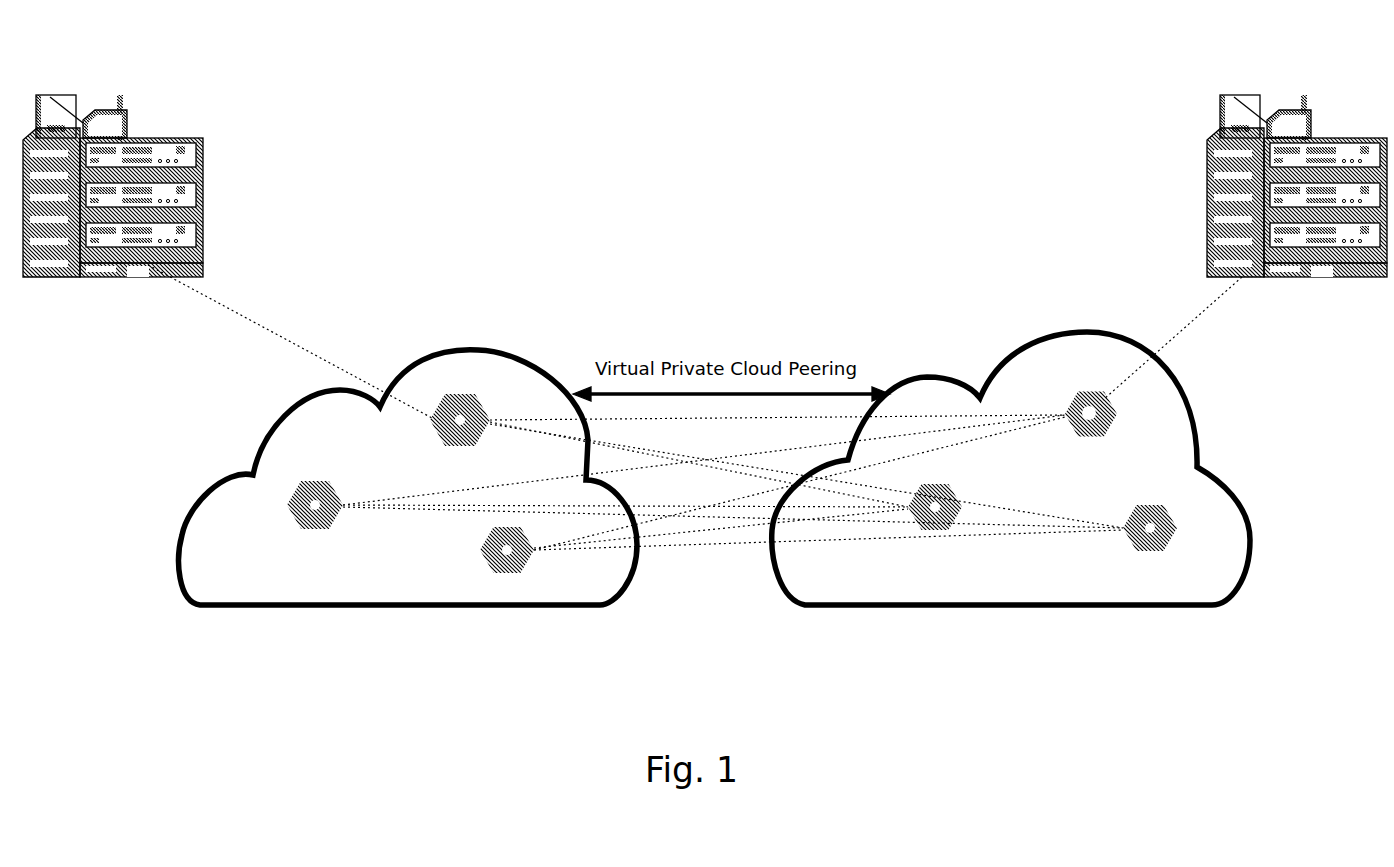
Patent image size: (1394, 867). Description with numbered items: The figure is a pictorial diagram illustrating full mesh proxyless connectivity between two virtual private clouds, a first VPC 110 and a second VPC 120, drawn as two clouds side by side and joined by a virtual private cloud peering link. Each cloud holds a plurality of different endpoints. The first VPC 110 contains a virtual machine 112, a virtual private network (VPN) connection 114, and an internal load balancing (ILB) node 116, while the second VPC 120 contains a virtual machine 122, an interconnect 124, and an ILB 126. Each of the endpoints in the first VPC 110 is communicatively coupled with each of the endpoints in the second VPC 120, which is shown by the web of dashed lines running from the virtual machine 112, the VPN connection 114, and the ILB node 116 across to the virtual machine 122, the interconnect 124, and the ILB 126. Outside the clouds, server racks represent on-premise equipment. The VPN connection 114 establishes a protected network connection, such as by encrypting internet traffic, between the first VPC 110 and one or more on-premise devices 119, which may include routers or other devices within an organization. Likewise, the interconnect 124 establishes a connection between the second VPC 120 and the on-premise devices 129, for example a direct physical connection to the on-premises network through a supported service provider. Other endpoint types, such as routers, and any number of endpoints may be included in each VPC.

The first VPC 110 is at (193, 588).
The virtual machine 112 is at (312, 505).
The virtual private network (VPN) connection 114 is at (478, 407).
The internal load balancing (ILB) node 116 is at (522, 565).
The on-premise devices 119 is at (162, 140).
The second VPC 120 is at (1223, 563).
The virtual machine 122 is at (957, 503).
The interconnect 124 is at (1090, 417).
The ILB 126 is at (1155, 527).
The on-premise devices 129 is at (1238, 116).